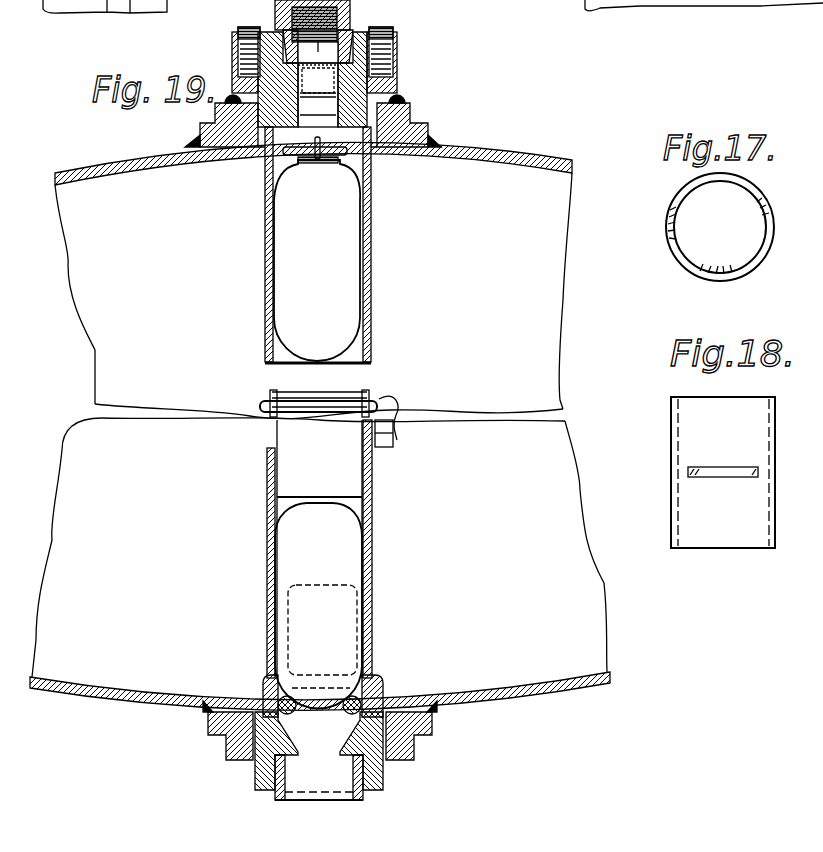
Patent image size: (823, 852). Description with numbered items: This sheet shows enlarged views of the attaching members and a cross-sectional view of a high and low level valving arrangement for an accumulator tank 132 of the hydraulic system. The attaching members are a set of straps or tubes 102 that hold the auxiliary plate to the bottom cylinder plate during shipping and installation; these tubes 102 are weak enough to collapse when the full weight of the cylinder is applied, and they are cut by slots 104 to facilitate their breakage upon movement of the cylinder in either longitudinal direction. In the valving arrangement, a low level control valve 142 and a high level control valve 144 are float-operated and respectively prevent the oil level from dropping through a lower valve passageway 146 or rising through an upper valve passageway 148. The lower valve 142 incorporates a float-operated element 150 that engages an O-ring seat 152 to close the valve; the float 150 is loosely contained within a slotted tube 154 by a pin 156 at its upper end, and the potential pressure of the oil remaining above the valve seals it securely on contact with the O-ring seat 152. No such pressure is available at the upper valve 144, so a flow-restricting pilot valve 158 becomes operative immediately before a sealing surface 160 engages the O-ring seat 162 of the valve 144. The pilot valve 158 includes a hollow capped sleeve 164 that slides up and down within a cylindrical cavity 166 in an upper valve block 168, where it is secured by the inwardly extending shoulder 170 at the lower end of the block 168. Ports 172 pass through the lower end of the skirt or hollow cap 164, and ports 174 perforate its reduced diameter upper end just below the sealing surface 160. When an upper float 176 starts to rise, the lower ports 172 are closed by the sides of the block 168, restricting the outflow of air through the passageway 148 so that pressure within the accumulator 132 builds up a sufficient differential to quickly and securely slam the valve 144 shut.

In FIG. 17, the straps or tubes 102 is at (688, 183).
In FIG. 18, the straps or tubes 102 is at (695, 427).
In FIG. 17, the slots 104 is at (683, 262).
In FIG. 18, the slots 104 is at (688, 472).
In FIG. 19, the accumulator tank 132 is at (508, 197).
In FIG. 19, the low level control valve 142 is at (362, 516).
In FIG. 19, the high level control valve 144 is at (368, 195).
In FIG. 19, the lower valve passageway 146 is at (388, 780).
In FIG. 19, the upper valve passageway 148 is at (318, 606).
In FIG. 19, the float-operated element 150 is at (358, 627).
In FIG. 19, the O-ring seat 152 is at (368, 694).
In FIG. 19, the slotted tube 154 is at (268, 490).
In FIG. 19, the pin 156 is at (346, 422).
In FIG. 19, the flow-restricting pilot valve 158 is at (350, 80).
In FIG. 19, the sealing surface 160 is at (343, 45).
In FIG. 19, the O-ring seat 162 is at (276, 36).
In FIG. 19, the hollow capped sleeve 164 is at (356, 118).
In FIG. 19, the cylindrical cavity 166 is at (220, 108).
In FIG. 19, the upper valve block 168 is at (234, 51).
In FIG. 19, the inwardly extending shoulder 170 is at (268, 172).
In FIG. 19, the ports 172 is at (357, 178).
In FIG. 19, the ports 174 is at (392, 36).
In FIG. 19, the upper float 176 is at (340, 350).